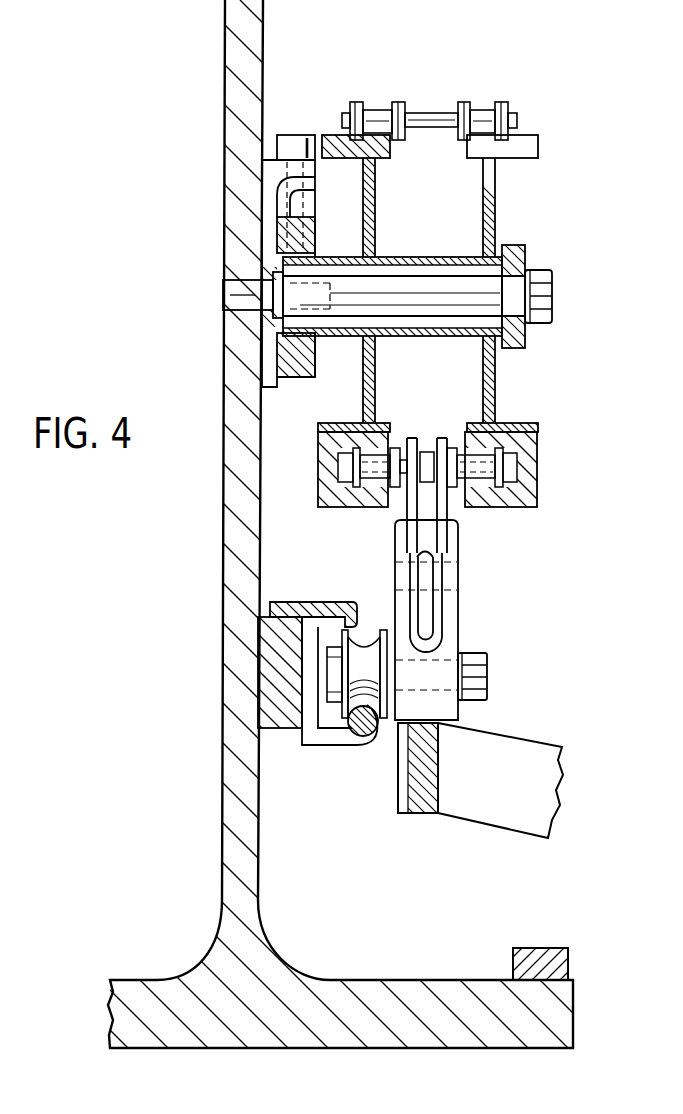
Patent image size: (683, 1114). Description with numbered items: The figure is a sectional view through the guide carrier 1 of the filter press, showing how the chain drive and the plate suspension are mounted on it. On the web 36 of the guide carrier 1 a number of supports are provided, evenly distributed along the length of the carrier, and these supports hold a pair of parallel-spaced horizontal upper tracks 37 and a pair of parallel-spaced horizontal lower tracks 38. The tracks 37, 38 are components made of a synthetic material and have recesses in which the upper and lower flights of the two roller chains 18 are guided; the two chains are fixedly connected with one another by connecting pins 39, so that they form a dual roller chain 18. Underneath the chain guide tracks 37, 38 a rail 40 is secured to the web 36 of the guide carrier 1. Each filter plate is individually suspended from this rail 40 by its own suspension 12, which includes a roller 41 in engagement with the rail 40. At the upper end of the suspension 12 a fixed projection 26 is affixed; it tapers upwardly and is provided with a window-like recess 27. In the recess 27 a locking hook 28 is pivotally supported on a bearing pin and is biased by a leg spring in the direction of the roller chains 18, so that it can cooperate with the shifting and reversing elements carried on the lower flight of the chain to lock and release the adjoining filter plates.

The guide carrier 1 is at (211, 807).
The suspension 12 is at (520, 790).
The roller chain 18 is at (375, 110).
The fixed projection 26 is at (452, 642).
The window-like recess 27 is at (440, 617).
The locking hook 28 is at (428, 583).
The web 36 is at (237, 152).
The upper track 37 is at (388, 158).
The lower track 38 is at (363, 498).
The connecting pin 39 is at (427, 113).
The rail 40 is at (357, 727).
The roller 41 is at (363, 650).